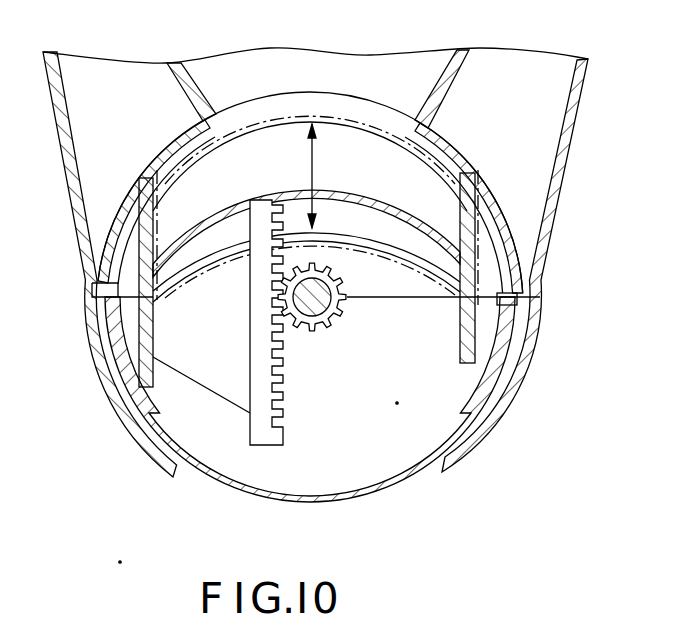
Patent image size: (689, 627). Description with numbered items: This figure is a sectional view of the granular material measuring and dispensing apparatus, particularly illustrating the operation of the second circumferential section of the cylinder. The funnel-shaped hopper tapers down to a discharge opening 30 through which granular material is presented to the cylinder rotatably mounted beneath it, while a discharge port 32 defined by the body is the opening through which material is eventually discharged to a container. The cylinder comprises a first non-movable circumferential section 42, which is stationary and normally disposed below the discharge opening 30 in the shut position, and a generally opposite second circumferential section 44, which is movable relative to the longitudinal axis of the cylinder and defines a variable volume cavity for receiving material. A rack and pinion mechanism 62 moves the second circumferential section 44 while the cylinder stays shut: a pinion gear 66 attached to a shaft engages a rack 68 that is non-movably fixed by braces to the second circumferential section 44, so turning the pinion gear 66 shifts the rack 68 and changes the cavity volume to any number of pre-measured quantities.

The discharge opening 30 is at (217, 96).
The discharge port 32 is at (206, 495).
The first non-movable circumferential section 42 is at (303, 503).
The second circumferential section 44 is at (224, 212).
The rack and pinion mechanism 62 is at (306, 368).
The pinion gear 66 is at (347, 314).
The rack 68 is at (258, 338).